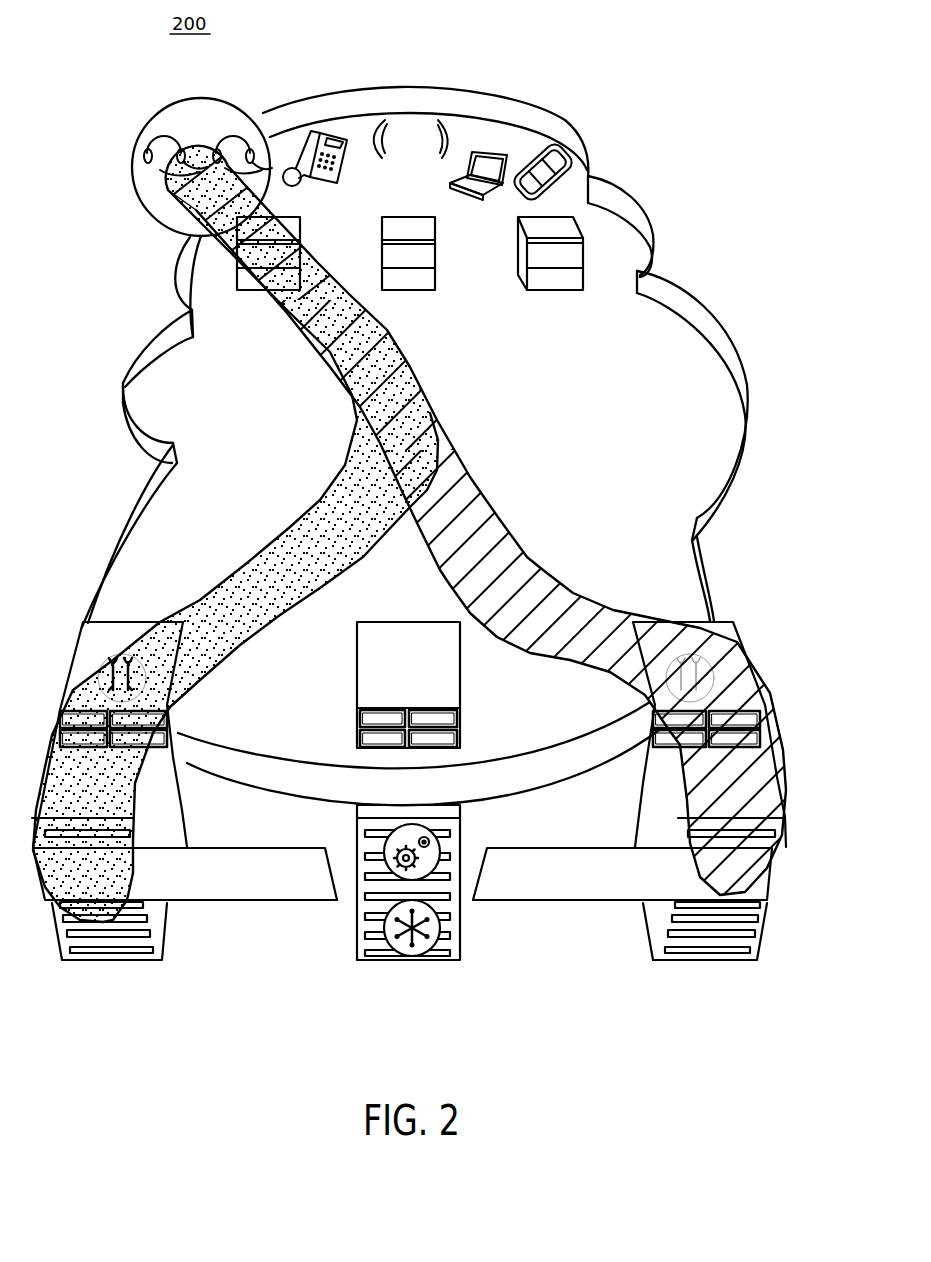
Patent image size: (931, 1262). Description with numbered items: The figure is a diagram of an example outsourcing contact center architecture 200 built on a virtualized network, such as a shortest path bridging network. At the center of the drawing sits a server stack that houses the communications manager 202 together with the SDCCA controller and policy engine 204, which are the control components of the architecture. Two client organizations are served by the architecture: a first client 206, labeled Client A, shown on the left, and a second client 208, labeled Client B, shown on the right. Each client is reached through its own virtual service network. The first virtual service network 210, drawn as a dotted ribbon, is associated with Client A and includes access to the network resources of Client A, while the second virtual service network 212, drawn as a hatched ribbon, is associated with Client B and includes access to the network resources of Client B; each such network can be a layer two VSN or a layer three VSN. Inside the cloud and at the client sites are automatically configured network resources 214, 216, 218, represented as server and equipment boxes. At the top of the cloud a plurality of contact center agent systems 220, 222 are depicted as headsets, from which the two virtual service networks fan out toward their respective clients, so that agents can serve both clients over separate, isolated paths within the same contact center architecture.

The outsourcing contact center architecture 200 is at (415, 446).
The communications manager 202 is at (440, 947).
The SDCCA controller and policy engine 204 is at (388, 868).
The first client 206 is at (185, 874).
The second client 208 is at (622, 874).
The first virtual service network (VSN) 210 is at (290, 527).
The second virtual service network (VSN) 212 is at (493, 517).
The automatically configured network resource 214 is at (111, 632).
The automatically configured network resource 216 is at (695, 633).
The automatically configured network resource 218 is at (292, 240).
The contact center agent system 220 is at (175, 123).
The contact center agent system 222 is at (240, 125).